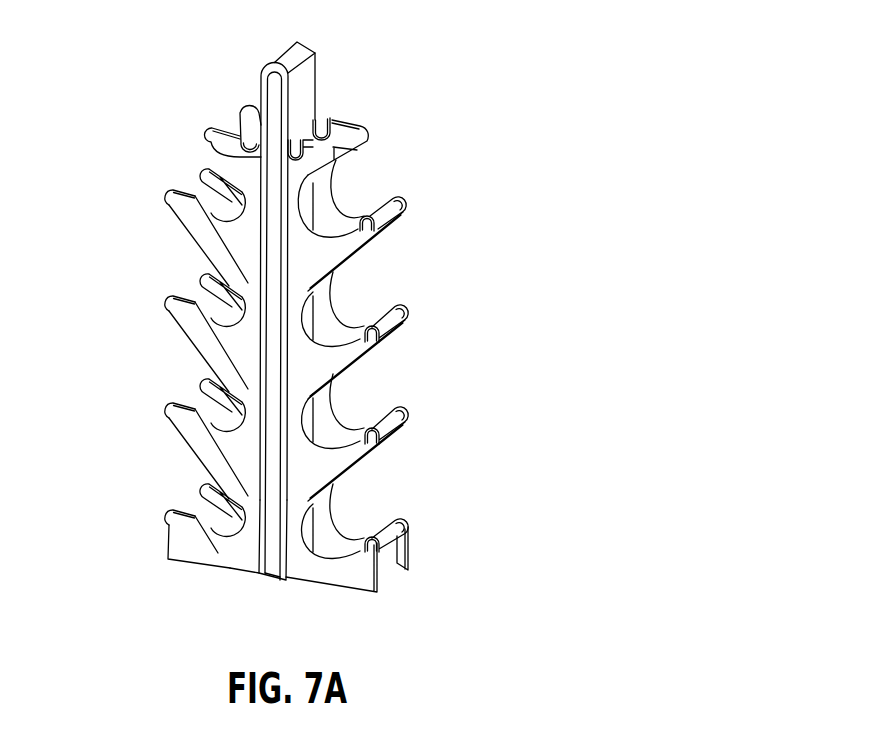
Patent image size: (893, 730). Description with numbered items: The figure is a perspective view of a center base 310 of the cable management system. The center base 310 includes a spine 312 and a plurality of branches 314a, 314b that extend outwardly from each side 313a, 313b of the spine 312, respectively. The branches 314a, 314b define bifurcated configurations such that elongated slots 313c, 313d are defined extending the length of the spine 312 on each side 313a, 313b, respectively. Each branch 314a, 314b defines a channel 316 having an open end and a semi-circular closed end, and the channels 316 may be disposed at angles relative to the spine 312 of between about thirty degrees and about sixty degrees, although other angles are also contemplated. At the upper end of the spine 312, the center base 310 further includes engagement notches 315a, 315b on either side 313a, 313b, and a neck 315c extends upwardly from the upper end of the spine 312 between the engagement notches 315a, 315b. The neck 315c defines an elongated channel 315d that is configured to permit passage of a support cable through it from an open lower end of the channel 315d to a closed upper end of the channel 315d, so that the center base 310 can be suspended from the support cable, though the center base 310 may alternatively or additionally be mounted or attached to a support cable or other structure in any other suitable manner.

The center base 310 is at (481, 44).
The spine 312 is at (285, 166).
The side of spine 313a is at (273, 507).
The side of spine 313b is at (260, 540).
The elongated slot 313c is at (318, 530).
The elongated slot 313d is at (243, 158).
The branch 314a is at (352, 348).
The branch 314b is at (193, 318).
The engagement notch 315a is at (323, 130).
The engagement notch 315b is at (250, 130).
The neck 315c is at (288, 50).
The elongated channel 315d is at (267, 345).
The channel 316 is at (197, 290).